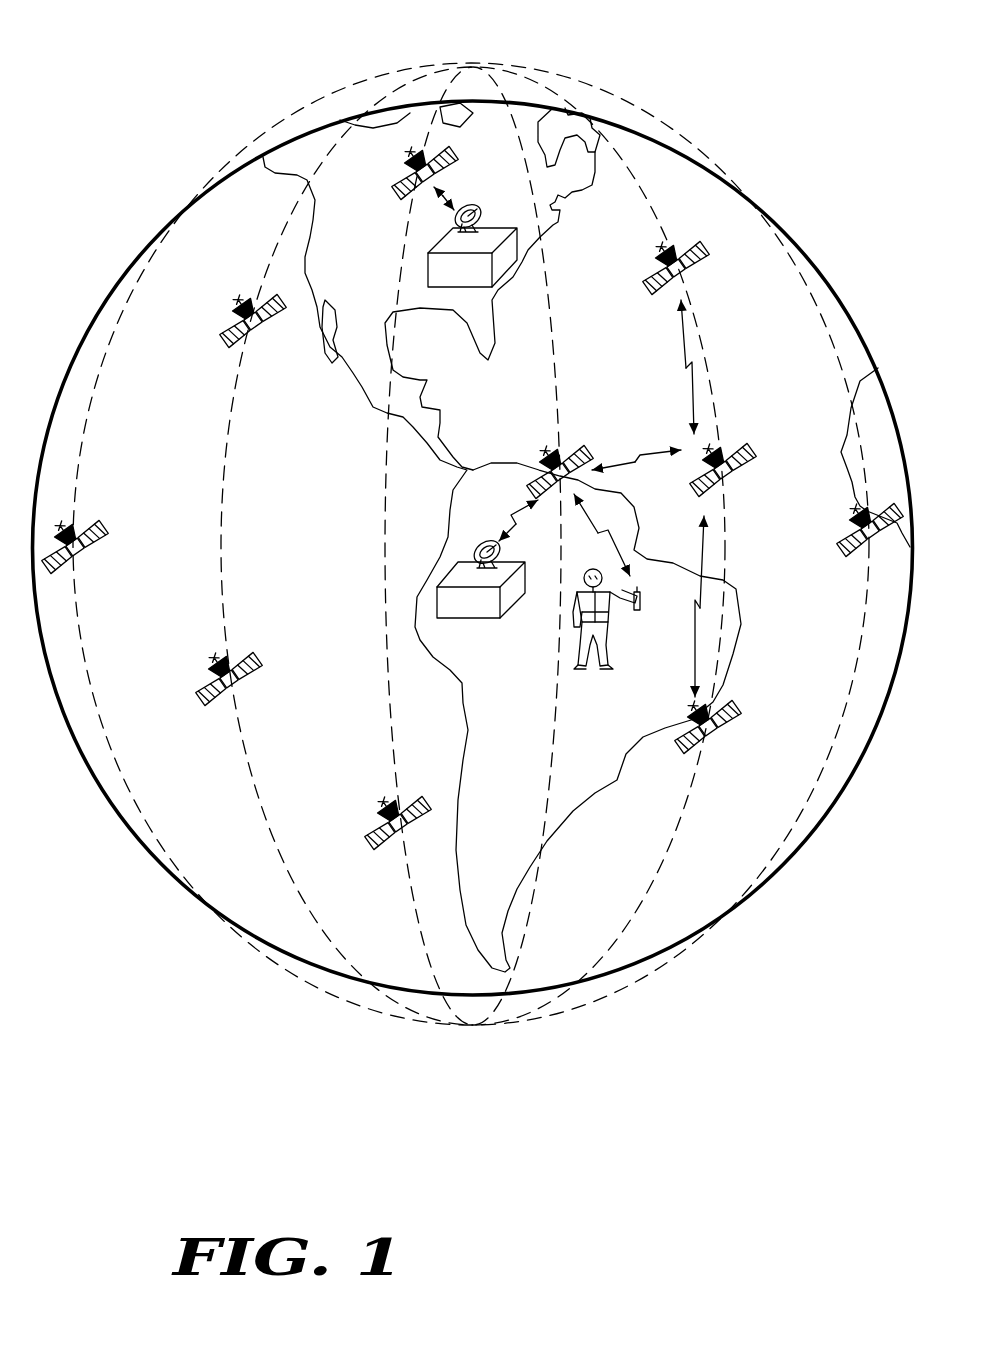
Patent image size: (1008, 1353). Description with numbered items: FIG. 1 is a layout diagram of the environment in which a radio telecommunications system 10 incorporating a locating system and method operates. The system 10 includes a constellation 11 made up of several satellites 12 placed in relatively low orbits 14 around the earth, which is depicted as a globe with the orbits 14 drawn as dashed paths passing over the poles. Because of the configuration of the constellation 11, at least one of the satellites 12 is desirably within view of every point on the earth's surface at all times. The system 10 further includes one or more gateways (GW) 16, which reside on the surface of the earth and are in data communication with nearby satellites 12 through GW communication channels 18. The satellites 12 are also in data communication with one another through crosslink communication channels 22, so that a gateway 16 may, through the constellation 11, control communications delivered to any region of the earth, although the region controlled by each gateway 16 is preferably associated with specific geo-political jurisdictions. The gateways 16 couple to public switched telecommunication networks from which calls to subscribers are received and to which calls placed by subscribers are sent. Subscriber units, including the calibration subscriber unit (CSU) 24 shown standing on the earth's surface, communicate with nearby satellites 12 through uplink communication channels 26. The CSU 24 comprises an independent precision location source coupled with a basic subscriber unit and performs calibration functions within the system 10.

The radio telecommunications system 10 is at (468, 1135).
The constellation 11 is at (475, 66).
The satellite 12 is at (407, 190).
The orbit 14 is at (283, 235).
The gateway (GW) 16 is at (497, 224).
The GW communication channel 18 is at (515, 520).
The crosslink communication channel 22 is at (681, 333).
The calibration subscriber unit (CSU) 24 is at (632, 603).
The uplink communication channel 26 is at (634, 528).